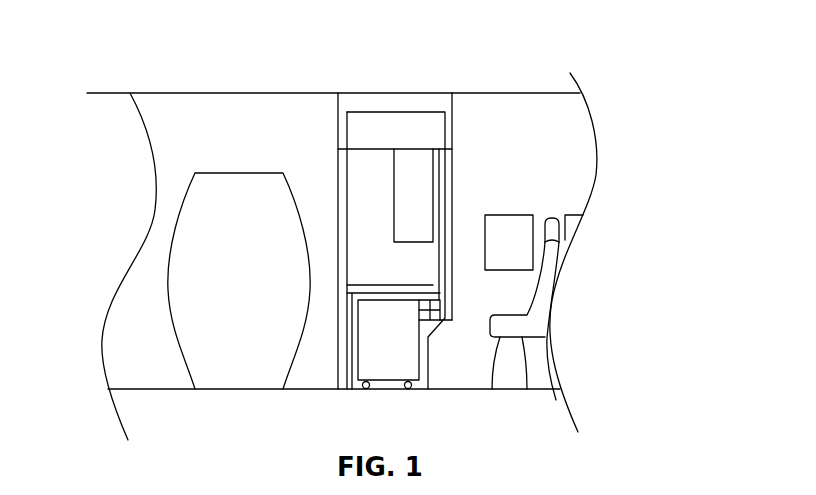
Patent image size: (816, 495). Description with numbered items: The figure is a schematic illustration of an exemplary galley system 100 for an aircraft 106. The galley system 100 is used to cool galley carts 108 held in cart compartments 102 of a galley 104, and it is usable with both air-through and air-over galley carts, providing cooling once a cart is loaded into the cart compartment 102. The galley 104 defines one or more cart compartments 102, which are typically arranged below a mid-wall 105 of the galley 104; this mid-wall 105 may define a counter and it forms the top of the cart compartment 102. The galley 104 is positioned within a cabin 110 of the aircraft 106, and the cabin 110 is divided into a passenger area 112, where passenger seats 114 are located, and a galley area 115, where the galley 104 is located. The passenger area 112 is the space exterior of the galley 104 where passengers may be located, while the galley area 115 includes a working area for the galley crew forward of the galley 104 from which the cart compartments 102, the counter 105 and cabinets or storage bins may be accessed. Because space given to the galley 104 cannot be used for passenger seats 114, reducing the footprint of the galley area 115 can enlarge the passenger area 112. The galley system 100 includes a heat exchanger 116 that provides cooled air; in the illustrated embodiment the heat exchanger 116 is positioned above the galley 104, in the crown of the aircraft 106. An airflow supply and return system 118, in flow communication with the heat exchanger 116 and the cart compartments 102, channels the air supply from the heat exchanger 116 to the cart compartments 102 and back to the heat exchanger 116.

The galley system 100 is at (373, 226).
The cart compartment 102 is at (424, 387).
The galley 104 is at (335, 290).
The mid-wall 105 is at (385, 287).
The aircraft 106 is at (242, 92).
The galley cart 108 is at (380, 370).
The cabin 110 is at (525, 132).
The passenger area 112 is at (573, 180).
The passenger seat 114 is at (540, 290).
The galley area 115 is at (371, 183).
The heat exchanger 116 is at (412, 92).
The airflow supply and return system 118 is at (448, 207).